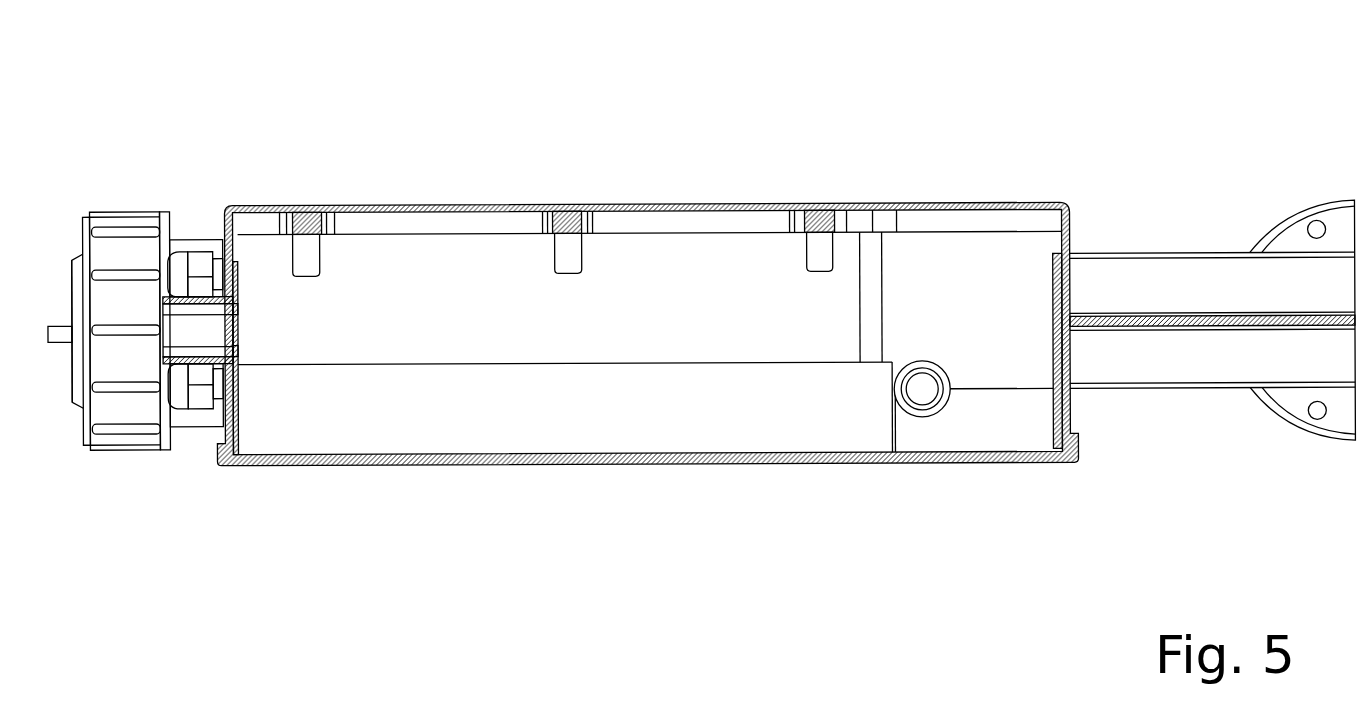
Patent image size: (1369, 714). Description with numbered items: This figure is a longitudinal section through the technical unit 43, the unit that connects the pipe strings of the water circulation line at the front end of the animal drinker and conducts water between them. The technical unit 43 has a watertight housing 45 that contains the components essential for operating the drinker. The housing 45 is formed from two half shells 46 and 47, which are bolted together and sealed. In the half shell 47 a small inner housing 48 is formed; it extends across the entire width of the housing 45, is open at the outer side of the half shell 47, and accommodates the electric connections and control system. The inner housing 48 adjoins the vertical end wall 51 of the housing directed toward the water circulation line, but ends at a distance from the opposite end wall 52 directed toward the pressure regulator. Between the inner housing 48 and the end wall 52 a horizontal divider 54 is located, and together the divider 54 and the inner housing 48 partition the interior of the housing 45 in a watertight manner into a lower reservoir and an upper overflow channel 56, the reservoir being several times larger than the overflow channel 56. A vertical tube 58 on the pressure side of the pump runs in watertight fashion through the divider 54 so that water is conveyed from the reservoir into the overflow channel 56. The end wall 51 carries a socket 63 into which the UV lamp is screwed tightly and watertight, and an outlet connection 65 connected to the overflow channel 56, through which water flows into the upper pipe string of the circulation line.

The technical unit 43 is at (1028, 114).
The watertight housing 45 is at (925, 202).
The half shell 46 is at (780, 465).
The half shell 47 is at (373, 205).
The inner housing 48 is at (642, 277).
The end wall 51 is at (217, 243).
The end wall 52 is at (1072, 235).
The horizontal divider 54 is at (985, 305).
The overflow channel 56 is at (455, 305).
The vertical tube 58 is at (930, 413).
The socket 63 is at (187, 243).
The outlet connection 65 is at (205, 335).